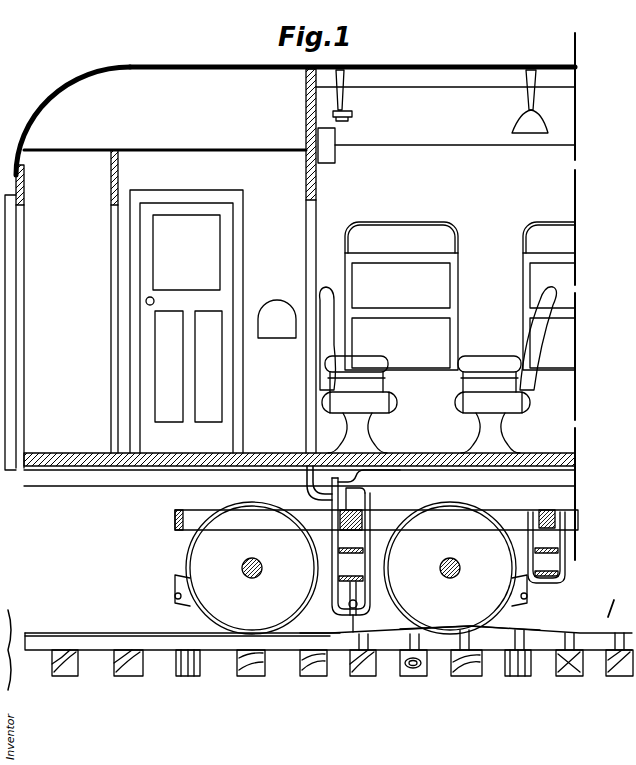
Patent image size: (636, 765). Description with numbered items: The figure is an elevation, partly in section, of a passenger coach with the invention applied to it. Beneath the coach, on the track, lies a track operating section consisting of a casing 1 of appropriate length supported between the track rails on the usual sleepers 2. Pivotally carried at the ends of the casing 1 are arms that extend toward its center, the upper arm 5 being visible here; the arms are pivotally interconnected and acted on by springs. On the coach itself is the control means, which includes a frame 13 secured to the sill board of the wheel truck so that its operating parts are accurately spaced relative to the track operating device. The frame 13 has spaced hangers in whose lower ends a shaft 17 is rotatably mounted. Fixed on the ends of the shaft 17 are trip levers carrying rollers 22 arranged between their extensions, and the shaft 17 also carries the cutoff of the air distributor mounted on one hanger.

The casing 1 is at (443, 641).
The sleepers 2 is at (342, 676).
The upper arm 5 is at (504, 628).
The frame 13 is at (348, 593).
The shaft 17 is at (310, 636).
The rollers 22 is at (352, 636).